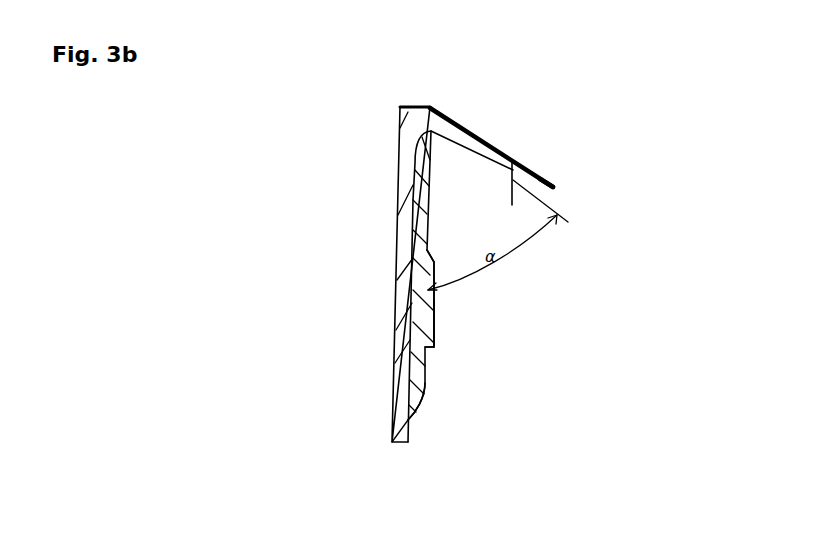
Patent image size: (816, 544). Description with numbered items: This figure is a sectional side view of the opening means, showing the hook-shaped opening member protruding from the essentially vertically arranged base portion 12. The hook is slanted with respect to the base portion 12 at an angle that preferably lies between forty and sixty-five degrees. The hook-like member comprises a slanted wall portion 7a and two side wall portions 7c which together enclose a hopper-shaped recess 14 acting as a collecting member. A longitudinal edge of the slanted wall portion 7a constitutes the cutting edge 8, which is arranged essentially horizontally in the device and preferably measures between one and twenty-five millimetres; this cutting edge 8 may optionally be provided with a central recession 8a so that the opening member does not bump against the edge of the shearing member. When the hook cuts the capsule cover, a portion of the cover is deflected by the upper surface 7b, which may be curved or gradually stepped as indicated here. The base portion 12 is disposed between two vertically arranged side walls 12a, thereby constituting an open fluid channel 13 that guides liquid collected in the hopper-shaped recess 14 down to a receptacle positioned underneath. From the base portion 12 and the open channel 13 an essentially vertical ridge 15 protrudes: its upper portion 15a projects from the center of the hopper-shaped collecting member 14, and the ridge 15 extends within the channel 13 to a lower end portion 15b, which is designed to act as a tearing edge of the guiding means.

The base portion 12 is at (527, 168).
The side walls 12a is at (435, 302).
The open fluid channel 13 is at (415, 211).
The hopper-shaped recess 14 is at (448, 138).
The ridge 15 is at (435, 323).
The upper portion of the ridge 15a is at (438, 166).
The lower end portion of the ridge 15b is at (410, 400).
The slanted wall portion 7a is at (491, 140).
The upper surface 7b is at (443, 118).
The side wall portions 7c is at (503, 184).
The cutting edge 8 is at (556, 186).
The central recession 8a is at (536, 208).